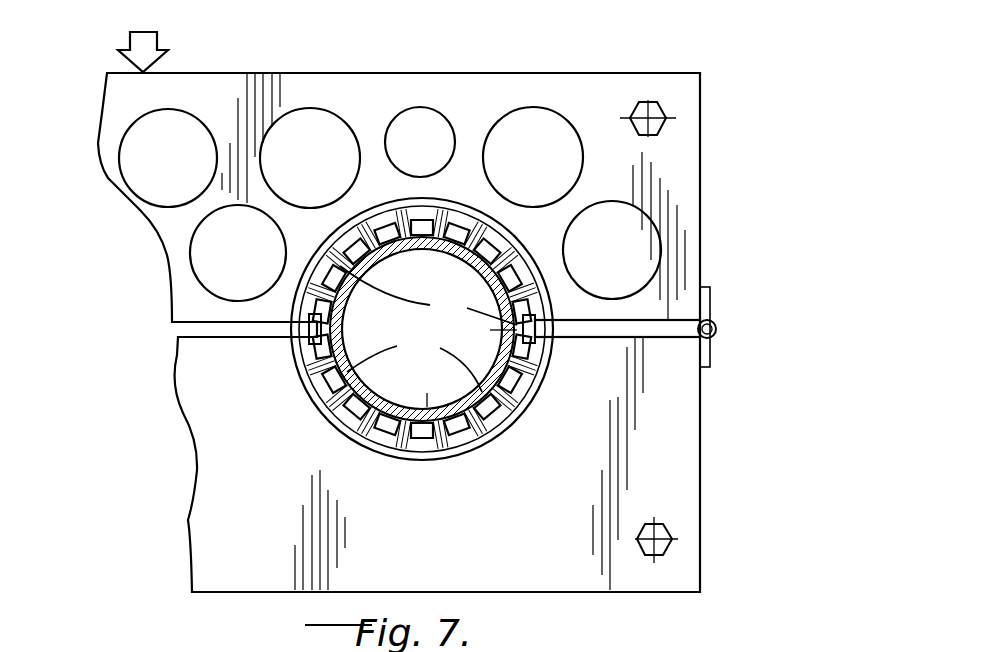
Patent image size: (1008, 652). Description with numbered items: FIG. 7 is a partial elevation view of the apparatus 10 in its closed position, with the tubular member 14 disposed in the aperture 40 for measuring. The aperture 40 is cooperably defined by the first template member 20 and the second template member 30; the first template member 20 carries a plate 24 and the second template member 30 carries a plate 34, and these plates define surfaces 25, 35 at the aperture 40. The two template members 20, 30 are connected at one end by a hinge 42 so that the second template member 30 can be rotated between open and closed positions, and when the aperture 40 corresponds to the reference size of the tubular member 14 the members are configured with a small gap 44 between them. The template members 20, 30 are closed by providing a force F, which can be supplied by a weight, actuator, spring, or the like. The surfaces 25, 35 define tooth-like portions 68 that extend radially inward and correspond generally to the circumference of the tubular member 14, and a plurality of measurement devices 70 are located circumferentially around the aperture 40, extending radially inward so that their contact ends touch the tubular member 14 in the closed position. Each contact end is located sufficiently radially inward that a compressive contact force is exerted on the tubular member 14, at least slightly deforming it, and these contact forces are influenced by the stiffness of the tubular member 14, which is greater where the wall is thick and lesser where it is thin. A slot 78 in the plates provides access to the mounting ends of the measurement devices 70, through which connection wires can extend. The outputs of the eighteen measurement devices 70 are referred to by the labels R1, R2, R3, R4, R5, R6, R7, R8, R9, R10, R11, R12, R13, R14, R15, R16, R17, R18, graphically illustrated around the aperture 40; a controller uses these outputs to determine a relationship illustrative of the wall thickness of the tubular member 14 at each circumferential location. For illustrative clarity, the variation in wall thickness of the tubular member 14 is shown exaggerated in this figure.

The force F is at (128, 42).
The apparatus 10 is at (115, 215).
The tubular member 14 is at (420, 331).
The first template member 20 is at (192, 536).
The plate 24 is at (683, 498).
The surface 25 is at (472, 356).
The second template member 30 is at (322, 73).
The plate 34 is at (612, 82).
The surface 35 is at (380, 249).
The aperture 40 is at (297, 335).
The hinge 42 is at (718, 328).
The gap 44 is at (365, 325).
The tooth-like portions 68 is at (428, 295).
The measurement devices 70 is at (360, 268).
The slot 78 is at (300, 373).
The output R1 is at (318, 311).
The output R2 is at (335, 279).
The output R3 is at (358, 252).
The output R4 is at (388, 235).
The output R5 is at (423, 229).
The output R6 is at (456, 235).
The output R7 is at (486, 252).
The output R8 is at (509, 279).
The output R9 is at (520, 312).
The output R10 is at (520, 346).
The output R11 is at (509, 379).
The output R12 is at (486, 406).
The output R13 is at (456, 423).
The output R14 is at (423, 429).
The output R15 is at (388, 423).
The output R16 is at (358, 406).
The output R17 is at (335, 379).
The output R18 is at (324, 346).